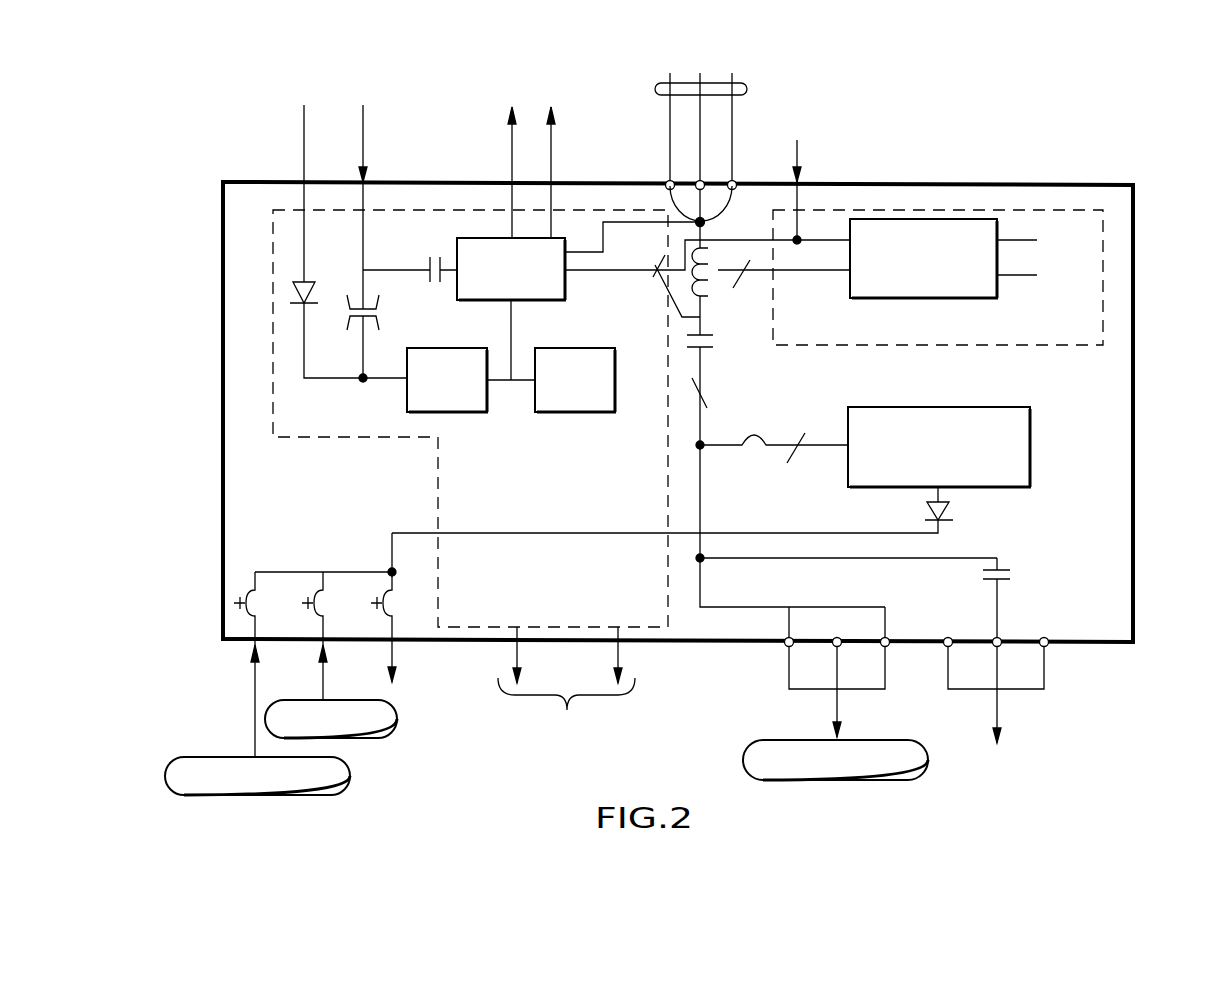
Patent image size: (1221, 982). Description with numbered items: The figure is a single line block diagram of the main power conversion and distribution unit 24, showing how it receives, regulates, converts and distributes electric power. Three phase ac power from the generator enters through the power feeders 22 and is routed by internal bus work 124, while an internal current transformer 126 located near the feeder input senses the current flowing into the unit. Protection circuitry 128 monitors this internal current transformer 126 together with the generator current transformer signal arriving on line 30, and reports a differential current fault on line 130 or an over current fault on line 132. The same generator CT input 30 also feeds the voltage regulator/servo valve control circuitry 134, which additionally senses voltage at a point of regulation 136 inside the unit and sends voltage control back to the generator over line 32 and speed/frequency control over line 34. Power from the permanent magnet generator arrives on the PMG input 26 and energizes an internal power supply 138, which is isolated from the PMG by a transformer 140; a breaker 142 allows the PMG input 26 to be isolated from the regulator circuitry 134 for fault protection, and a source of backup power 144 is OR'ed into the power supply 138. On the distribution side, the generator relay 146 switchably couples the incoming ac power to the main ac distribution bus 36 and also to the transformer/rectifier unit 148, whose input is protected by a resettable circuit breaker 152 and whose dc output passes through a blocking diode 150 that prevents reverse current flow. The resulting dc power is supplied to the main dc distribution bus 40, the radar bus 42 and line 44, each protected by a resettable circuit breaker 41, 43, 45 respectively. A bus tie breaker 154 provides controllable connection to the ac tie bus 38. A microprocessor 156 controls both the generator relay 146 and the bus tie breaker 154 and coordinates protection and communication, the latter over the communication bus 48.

The power feeders 22 is at (747, 87).
The main power conversion and distribution unit 24 is at (1134, 575).
The PMG input line 26 is at (366, 120).
The generator current transformer input line 30 is at (797, 150).
The voltage control line 32 is at (517, 147).
The speed/frequency control line 34 is at (555, 149).
The main ac distribution bus 36 is at (885, 740).
The ac tie bus 38 is at (1000, 705).
The main dc distribution bus 40 is at (212, 757).
The resettable circuit breaker 41 is at (250, 597).
The radar bus 42 is at (380, 738).
The resettable circuit breaker 43 is at (318, 597).
The dc supply line 44 is at (393, 655).
The resettable circuit breaker 45 is at (386, 597).
The communication bus 48 is at (566, 645).
The internal bus work 124 is at (712, 560).
The internal current transformer 126 is at (708, 292).
The protection circuitry 128 is at (953, 219).
The differential current fault line 130 is at (1027, 240).
The over current fault line 132 is at (1027, 275).
The voltage regulator/servo valve control circuitry 134 is at (548, 300).
The point of regulation 136 is at (700, 222).
The internal power supply 138 is at (458, 412).
The transformer 140 is at (398, 309).
The breaker 142 is at (430, 267).
The source of backup power 144 is at (304, 133).
The generator relay 146 is at (702, 350).
The transformer/rectifier unit 148 is at (1030, 445).
The blocking diode 150 is at (953, 505).
The resettable circuit breaker 152 is at (751, 447).
The bus tie breaker 154 is at (1003, 582).
The microprocessor 156 is at (588, 412).